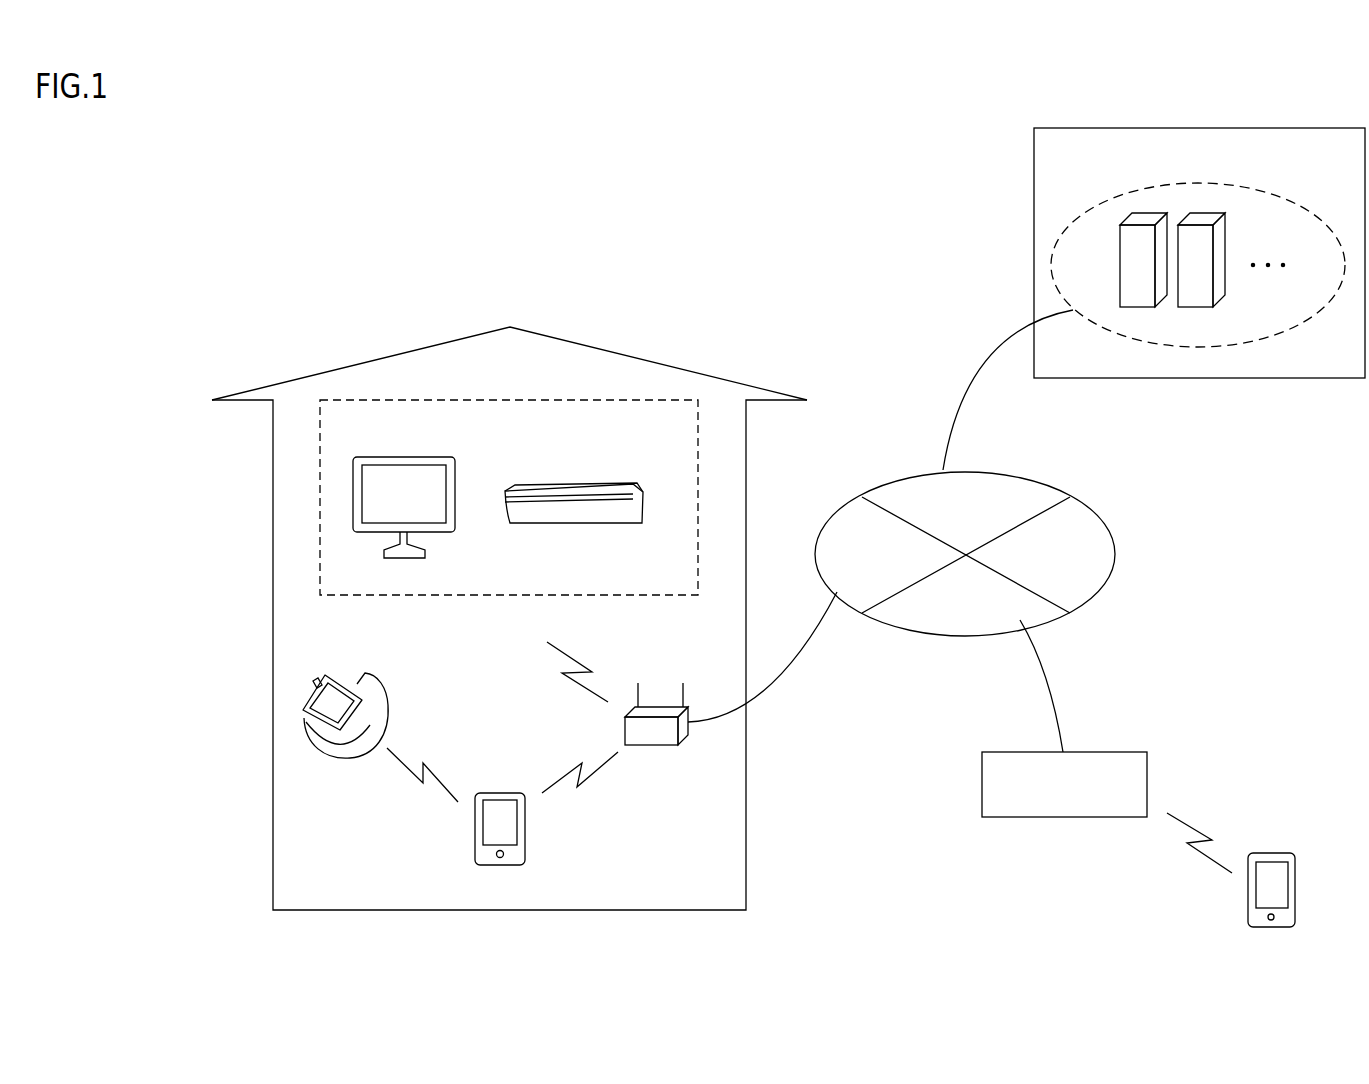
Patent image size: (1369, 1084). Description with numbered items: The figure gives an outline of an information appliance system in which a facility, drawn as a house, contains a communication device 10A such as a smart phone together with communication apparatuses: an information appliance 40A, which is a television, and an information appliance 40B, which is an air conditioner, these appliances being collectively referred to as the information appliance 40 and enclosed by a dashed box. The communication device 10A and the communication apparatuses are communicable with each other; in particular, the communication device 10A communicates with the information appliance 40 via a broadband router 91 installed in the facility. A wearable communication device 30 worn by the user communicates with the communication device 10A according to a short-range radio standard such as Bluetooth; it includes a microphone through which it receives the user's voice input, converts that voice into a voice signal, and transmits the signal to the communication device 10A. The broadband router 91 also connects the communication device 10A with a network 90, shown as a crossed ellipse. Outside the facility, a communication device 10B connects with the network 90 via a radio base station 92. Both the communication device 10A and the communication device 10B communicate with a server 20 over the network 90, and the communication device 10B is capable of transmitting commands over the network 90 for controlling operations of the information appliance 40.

The server 20 is at (1318, 128).
The network 90 is at (1058, 488).
The information appliance 40 is at (518, 400).
The information appliance (television) 40A is at (405, 457).
The information appliance (air conditioner) 40B is at (588, 483).
The wearable communication device 30 is at (368, 675).
The communication device 10A is at (500, 793).
The broadband router 91 is at (653, 745).
The radio base station 92 is at (1107, 752).
The communication device 10B is at (1272, 853).